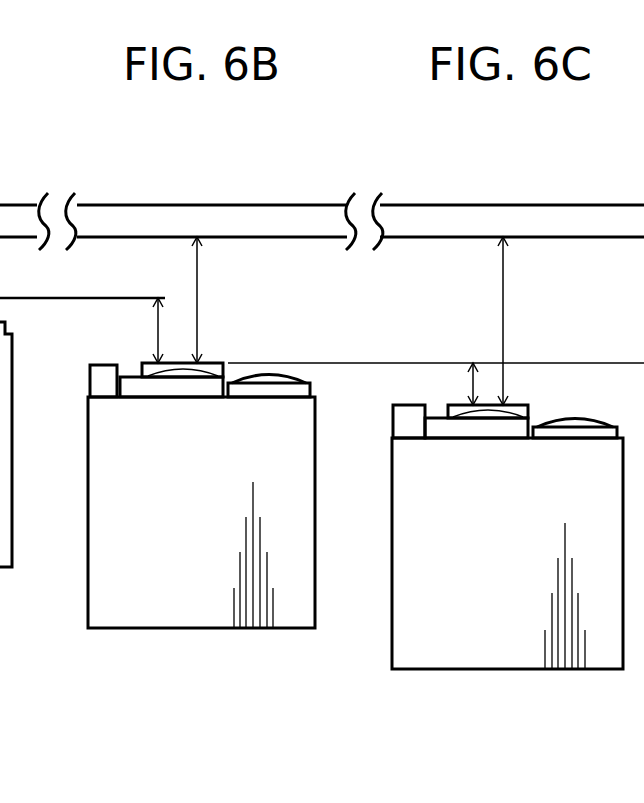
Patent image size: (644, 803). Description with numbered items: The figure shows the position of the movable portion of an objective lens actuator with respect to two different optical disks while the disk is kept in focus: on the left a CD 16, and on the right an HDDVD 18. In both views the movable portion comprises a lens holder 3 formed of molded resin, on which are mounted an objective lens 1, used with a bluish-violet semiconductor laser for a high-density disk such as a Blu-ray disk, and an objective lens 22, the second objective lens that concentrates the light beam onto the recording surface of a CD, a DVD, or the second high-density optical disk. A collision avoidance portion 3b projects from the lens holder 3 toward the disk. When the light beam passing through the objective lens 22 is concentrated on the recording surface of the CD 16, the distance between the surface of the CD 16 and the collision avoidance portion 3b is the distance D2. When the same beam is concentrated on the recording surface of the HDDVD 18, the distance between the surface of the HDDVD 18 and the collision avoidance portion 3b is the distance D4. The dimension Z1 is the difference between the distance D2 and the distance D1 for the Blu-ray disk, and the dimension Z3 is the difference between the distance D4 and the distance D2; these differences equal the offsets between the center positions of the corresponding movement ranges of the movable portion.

In FIG. 6B, the CD 16 is at (155, 222).
In FIG. 6C, the HDDVD 18 is at (467, 222).
In FIG. 6B, the collision avoidance portion 3b is at (147, 364).
In FIG. 6C, the collision avoidance portion 3b is at (448, 404).
In FIG. 6B, the objective lens 1 is at (177, 372).
In FIG. 6C, the objective lens 1 is at (480, 413).
In FIG. 6B, the objective lens 22 is at (260, 380).
In FIG. 6C, the objective lens 22 is at (570, 425).
In FIG. 6B, the lens holder 3 is at (197, 593).
In FIG. 6C, the lens holder 3 is at (512, 625).
In FIG. 6B, the difference Z1 is at (157, 339).
In FIG. 6C, the difference Z3 is at (470, 388).
In FIG. 6B, the distance D2 is at (197, 313).
In FIG. 6C, the distance D4 is at (503, 313).